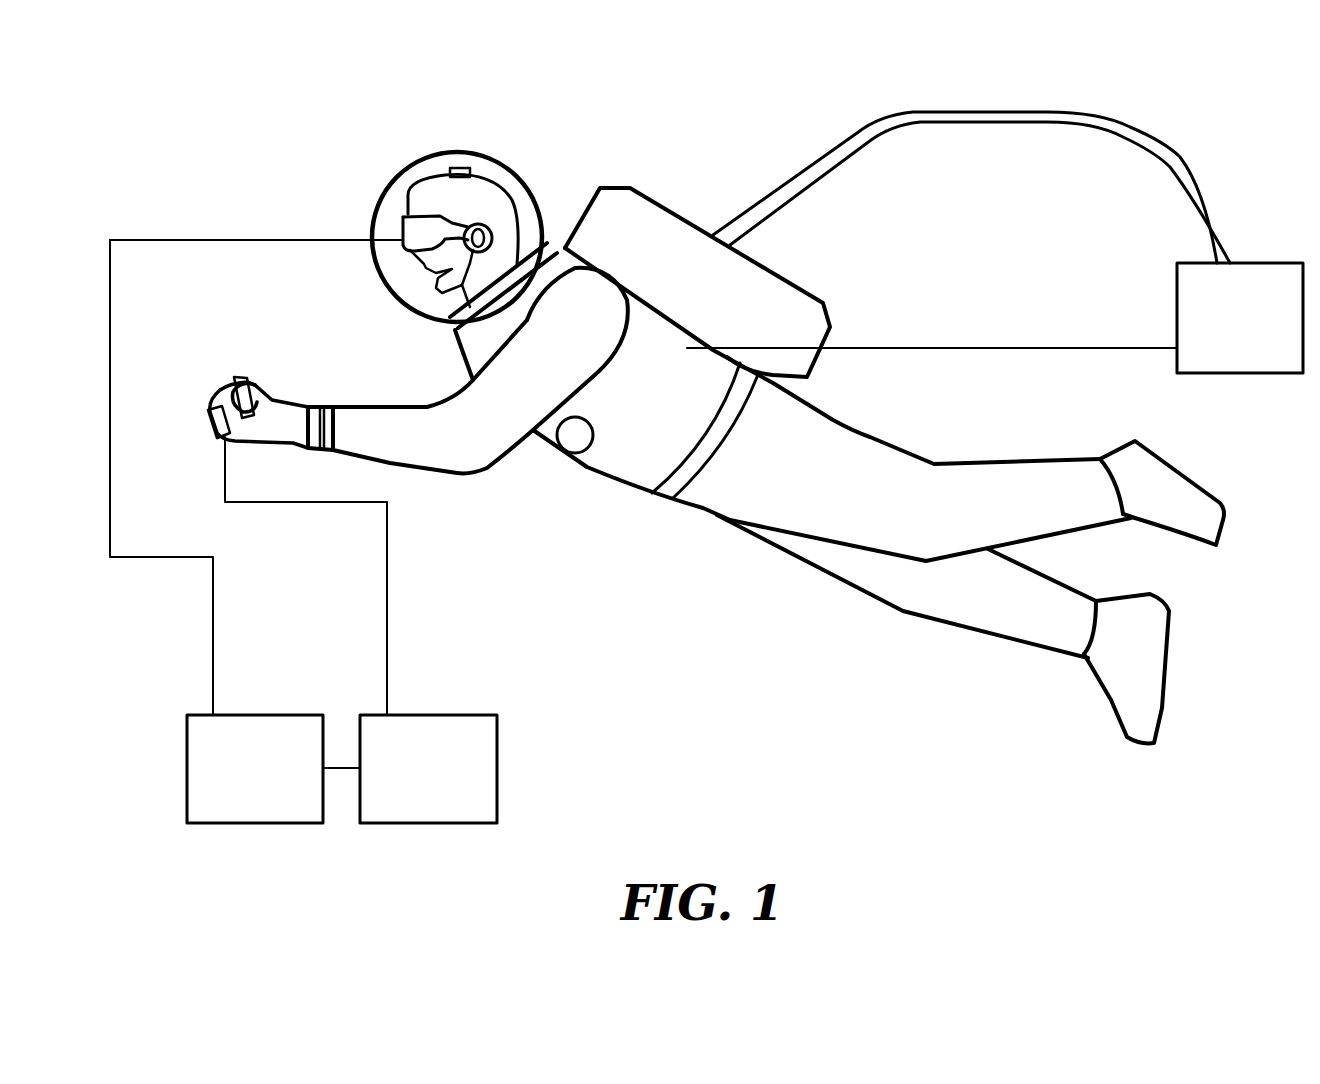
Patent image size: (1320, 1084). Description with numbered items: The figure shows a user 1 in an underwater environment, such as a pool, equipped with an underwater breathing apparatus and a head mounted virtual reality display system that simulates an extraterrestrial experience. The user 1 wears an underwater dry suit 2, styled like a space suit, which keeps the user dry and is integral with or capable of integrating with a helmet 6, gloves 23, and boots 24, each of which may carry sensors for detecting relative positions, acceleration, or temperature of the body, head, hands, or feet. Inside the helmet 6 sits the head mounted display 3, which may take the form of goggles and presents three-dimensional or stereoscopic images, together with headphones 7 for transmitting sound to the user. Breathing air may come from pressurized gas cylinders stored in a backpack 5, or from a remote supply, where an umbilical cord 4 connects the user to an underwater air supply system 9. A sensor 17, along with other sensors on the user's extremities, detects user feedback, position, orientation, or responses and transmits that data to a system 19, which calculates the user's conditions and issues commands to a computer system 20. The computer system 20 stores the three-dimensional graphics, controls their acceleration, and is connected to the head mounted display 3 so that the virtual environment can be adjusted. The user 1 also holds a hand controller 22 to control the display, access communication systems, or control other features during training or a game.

The user 1 is at (432, 197).
The underwater dry suit 2 is at (460, 362).
The head mounted display 3 is at (403, 232).
The umbilical cord 4 is at (877, 137).
The backpack 5 is at (798, 290).
The helmet 6 is at (382, 278).
The headphones 7 is at (486, 228).
The air supply system 9 is at (1240, 318).
The sensor 17 is at (462, 167).
The system 19 is at (428, 769).
The computer system 20 is at (255, 769).
The hand controller 22 is at (238, 375).
The gloves 23 is at (280, 418).
The boots 24 is at (1216, 531).